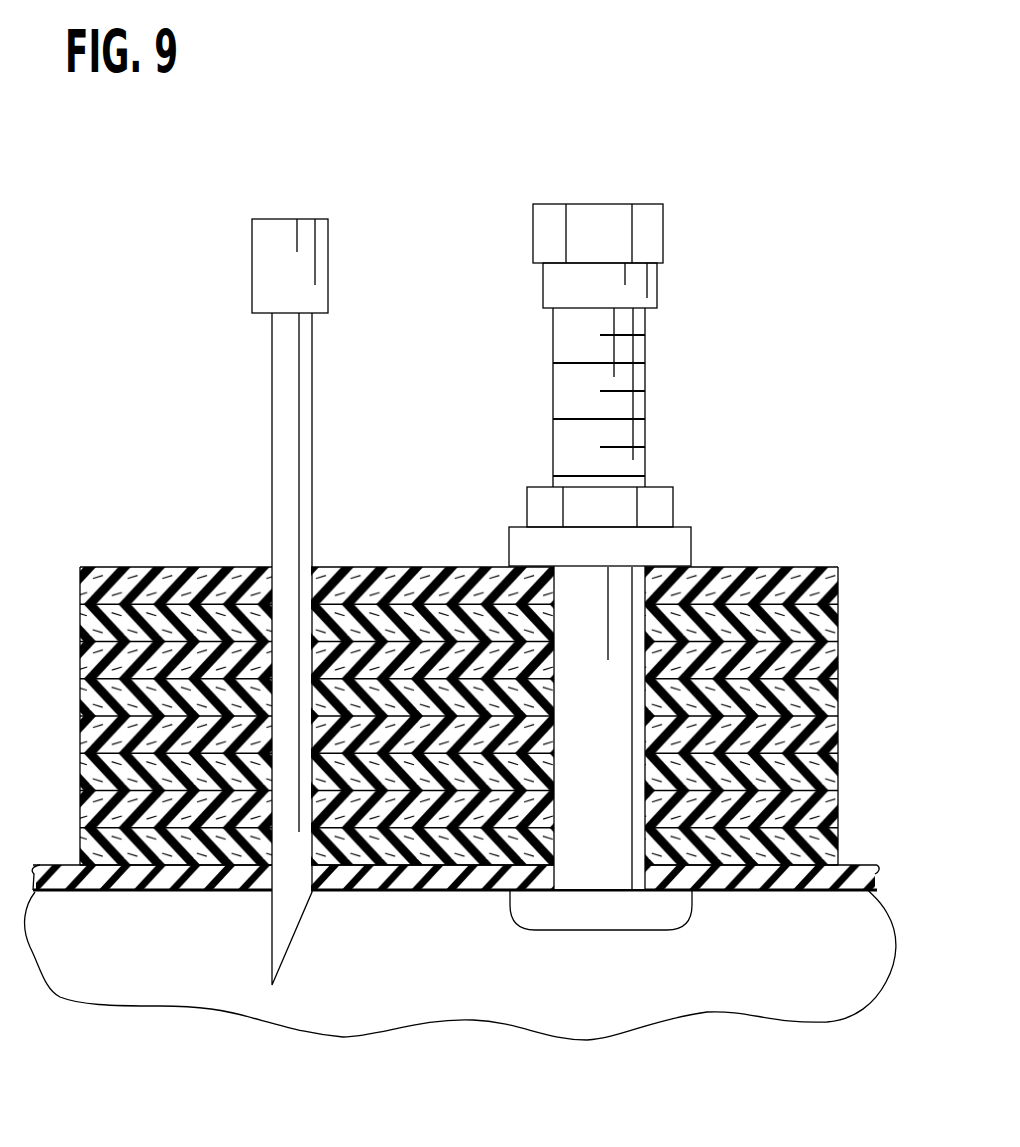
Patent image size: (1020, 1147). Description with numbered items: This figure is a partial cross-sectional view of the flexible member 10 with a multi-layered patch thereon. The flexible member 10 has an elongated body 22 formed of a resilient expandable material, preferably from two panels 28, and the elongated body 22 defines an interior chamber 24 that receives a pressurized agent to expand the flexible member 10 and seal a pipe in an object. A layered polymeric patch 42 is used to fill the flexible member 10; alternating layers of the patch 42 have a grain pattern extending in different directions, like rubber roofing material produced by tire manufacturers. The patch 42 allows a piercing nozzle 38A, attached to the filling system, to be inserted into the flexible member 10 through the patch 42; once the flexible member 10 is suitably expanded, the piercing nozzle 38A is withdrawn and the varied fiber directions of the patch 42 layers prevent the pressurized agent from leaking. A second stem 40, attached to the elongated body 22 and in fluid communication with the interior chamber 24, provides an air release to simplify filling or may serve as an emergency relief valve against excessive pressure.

The flexible member 10 is at (435, 641).
The layered polymeric patch 42 is at (803, 567).
The elongated body 22 is at (868, 863).
The panels 28 is at (55, 863).
The interior chamber 24 is at (435, 984).
The piercing nozzle 38A is at (285, 450).
The second stem 40 is at (640, 377).